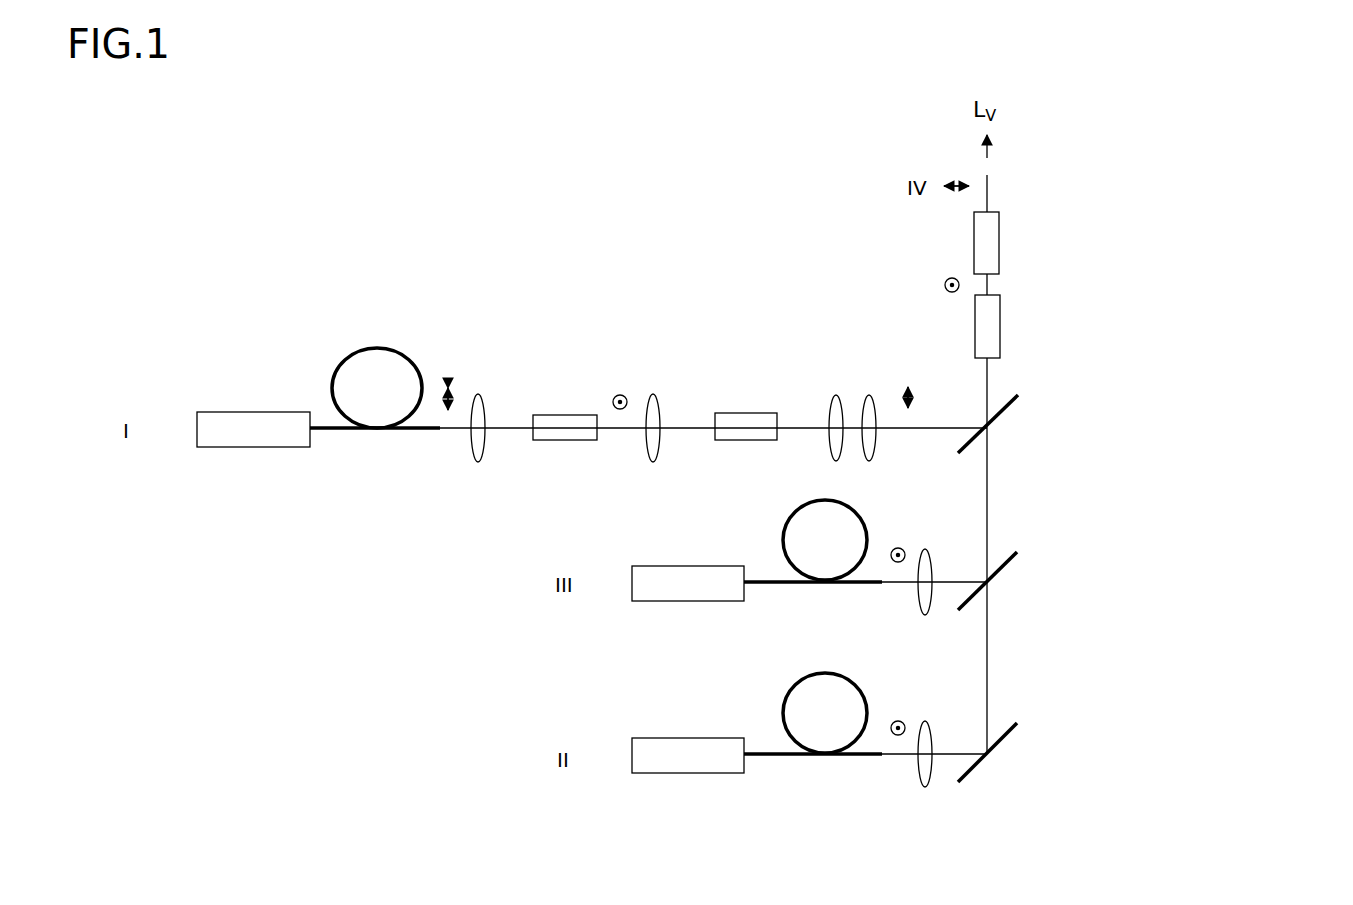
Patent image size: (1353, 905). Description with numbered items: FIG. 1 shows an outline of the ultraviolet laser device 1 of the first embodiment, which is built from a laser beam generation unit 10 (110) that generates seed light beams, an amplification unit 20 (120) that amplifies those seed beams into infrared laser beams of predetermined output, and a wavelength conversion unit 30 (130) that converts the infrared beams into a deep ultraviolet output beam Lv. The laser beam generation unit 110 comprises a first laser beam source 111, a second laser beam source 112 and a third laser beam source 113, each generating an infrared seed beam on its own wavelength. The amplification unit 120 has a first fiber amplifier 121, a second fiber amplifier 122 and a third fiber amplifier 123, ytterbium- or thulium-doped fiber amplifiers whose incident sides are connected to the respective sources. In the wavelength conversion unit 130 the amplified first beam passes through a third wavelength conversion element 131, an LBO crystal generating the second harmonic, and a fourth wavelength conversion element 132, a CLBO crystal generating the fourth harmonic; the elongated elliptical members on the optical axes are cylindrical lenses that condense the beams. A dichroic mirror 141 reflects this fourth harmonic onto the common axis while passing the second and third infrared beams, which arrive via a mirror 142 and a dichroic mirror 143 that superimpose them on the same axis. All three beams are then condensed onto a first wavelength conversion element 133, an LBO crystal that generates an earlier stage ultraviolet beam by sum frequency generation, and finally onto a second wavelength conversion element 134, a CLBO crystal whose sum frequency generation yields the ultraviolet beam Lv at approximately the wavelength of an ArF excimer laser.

The ultraviolet laser device 1 is at (532, 108).
The light source unit 10 is at (242, 254).
The laser beam generation unit 110 is at (253, 469).
The amplifier unit 20 is at (438, 254).
The amplification unit 120 is at (375, 412).
The wavelength conversion unit 30 is at (728, 254).
The wavelength conversion unit 130 is at (915, 364).
The first laser beam source 111 is at (262, 447).
The second laser beam source 112 is at (696, 773).
The third laser beam source 113 is at (696, 601).
The first fiber amplifier 121 is at (377, 430).
The second fiber amplifier 122 is at (825, 756).
The third fiber amplifier 123 is at (825, 584).
The third wavelength conversion element 131 is at (540, 441).
The fourth wavelength conversion element 132 is at (720, 441).
The first wavelength conversion element 133 is at (975, 322).
The second wavelength conversion element 134 is at (974, 241).
The dichroic mirror 141 is at (1005, 412).
The mirror 142 is at (1005, 740).
The dichroic mirror 143 is at (1005, 568).